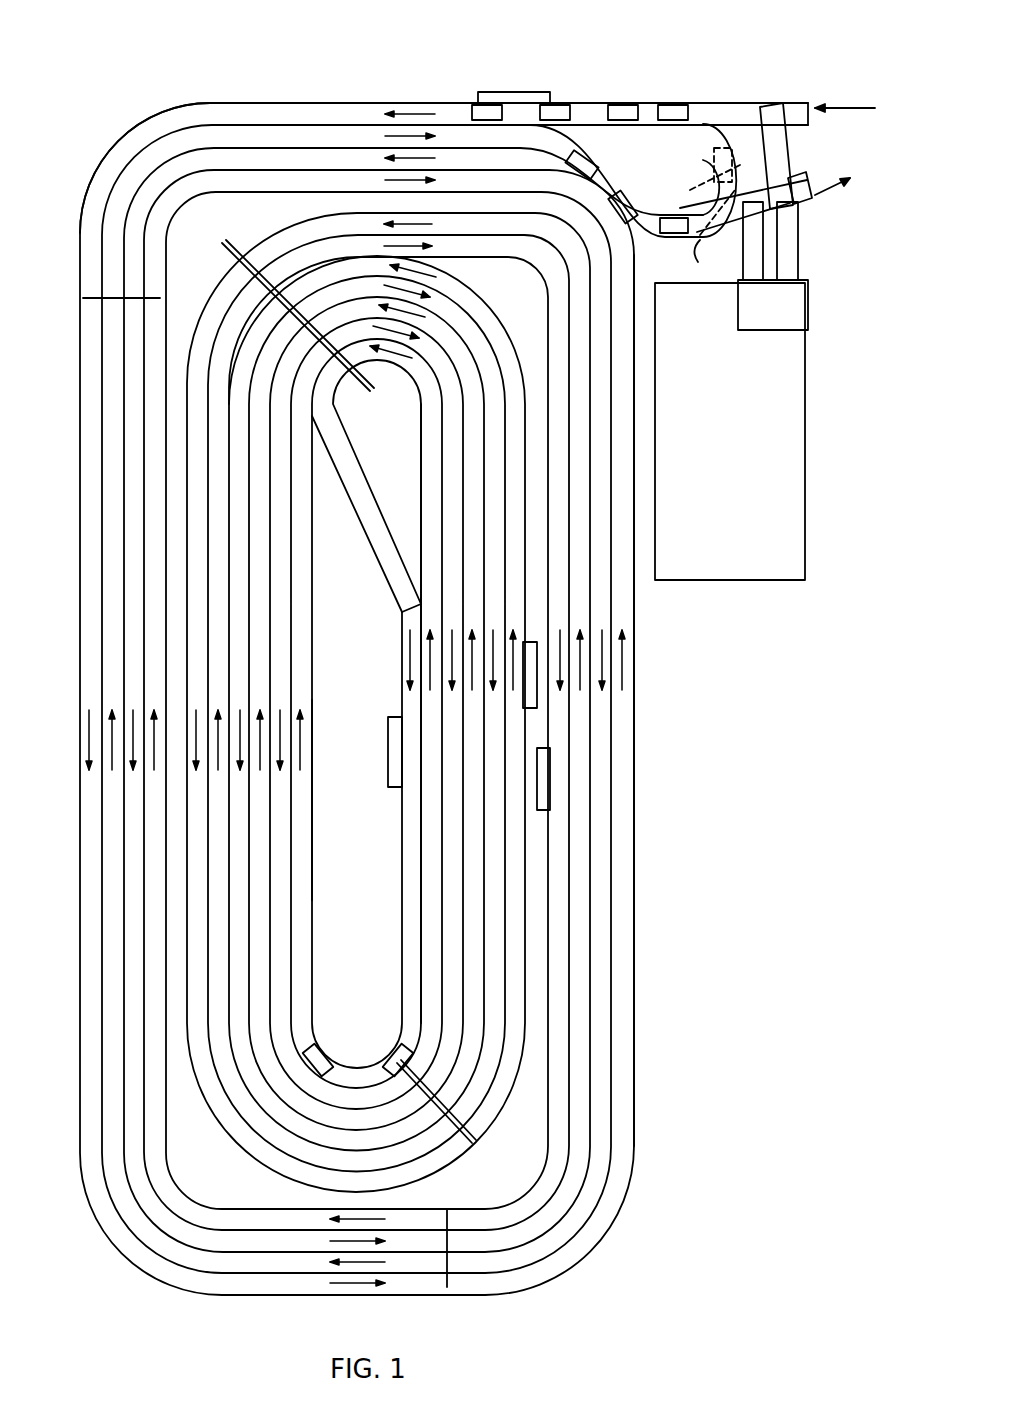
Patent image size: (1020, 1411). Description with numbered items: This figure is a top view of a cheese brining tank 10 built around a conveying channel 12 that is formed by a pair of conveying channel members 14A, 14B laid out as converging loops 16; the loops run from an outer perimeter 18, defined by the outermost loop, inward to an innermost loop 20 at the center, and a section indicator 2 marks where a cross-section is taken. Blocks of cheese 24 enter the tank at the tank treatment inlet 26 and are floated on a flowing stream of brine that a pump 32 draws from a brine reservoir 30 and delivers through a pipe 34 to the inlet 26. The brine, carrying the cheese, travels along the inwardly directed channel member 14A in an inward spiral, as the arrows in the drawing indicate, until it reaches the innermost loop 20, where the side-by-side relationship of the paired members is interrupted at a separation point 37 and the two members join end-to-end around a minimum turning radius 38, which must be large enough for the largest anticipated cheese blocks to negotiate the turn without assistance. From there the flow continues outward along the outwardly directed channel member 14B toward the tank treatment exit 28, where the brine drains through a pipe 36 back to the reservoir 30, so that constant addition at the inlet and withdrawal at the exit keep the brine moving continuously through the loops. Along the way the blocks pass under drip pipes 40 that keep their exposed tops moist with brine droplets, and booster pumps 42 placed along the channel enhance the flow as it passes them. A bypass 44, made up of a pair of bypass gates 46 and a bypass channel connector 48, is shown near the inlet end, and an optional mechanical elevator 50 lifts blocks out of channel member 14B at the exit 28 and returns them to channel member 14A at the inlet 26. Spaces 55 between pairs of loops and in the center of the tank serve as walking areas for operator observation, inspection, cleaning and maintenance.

The tank 10 is at (262, 80).
The conveying channel 12 is at (630, 945).
The first conveying channel member 14A is at (232, 385).
The second conveying channel member 14B is at (262, 505).
The loops 16 is at (150, 165).
The outer perimeter 18 is at (405, 103).
The innermost loop 20 is at (430, 828).
The blocks of cheese 24 is at (620, 112).
The tank treatment inlet 26 is at (812, 104).
The tank treatment exit 28 is at (806, 196).
The brine reservoir 30 is at (736, 467).
The pump 32 is at (790, 310).
The pipe 34 is at (765, 258).
The pipe 36 is at (800, 236).
The separation point 37 is at (400, 615).
The minimum turning radius 38 is at (388, 380).
The drip pipes 40 is at (105, 245).
The booster pumps 42 is at (500, 92).
The bypass 44 is at (727, 148).
The bypass gates 46 is at (705, 240).
The bypass channel connector 48 is at (697, 140).
The elevator 50 is at (795, 160).
The spaces 55 is at (203, 203).
The section line 2 is at (242, 222).